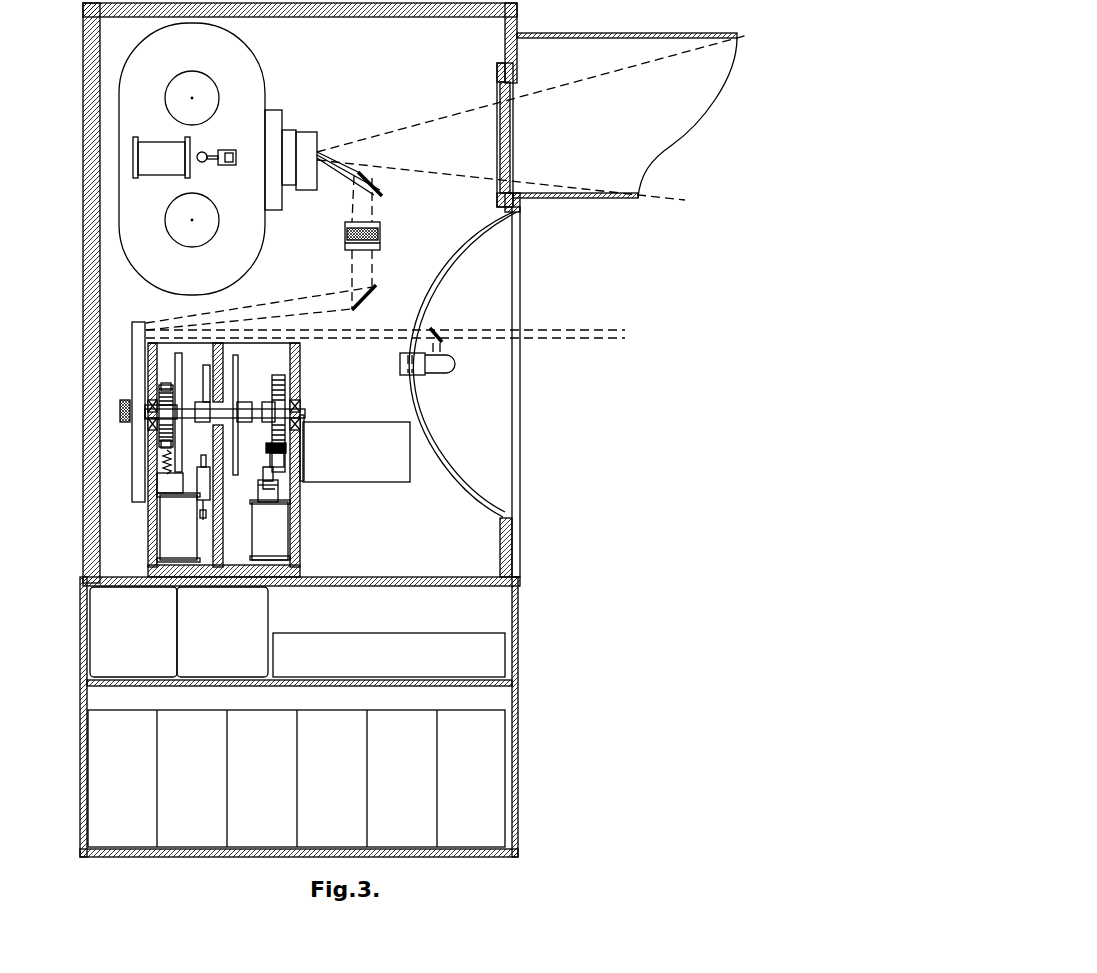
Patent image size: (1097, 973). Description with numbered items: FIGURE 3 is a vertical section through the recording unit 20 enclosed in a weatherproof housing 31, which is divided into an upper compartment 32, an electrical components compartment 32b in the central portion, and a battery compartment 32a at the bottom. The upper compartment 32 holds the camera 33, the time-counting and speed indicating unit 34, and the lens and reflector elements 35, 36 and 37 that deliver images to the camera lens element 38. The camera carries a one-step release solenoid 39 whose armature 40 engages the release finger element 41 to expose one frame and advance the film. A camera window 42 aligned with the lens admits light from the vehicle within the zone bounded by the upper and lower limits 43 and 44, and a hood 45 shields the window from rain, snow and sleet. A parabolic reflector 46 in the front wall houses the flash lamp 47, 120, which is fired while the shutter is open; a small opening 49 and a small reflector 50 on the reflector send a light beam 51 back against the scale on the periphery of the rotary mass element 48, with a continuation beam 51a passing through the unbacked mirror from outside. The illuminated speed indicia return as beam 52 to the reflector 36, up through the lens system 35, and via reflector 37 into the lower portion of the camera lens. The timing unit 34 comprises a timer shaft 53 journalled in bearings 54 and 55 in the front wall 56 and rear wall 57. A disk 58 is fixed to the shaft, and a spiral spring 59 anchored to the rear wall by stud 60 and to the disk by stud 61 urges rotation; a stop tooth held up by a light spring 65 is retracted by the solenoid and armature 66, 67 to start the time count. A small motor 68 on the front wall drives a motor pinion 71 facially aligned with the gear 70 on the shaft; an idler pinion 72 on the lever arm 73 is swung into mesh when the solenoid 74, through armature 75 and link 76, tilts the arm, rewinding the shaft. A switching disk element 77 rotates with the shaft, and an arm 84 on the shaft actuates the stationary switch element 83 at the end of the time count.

The recording unit 20 is at (80, 768).
The weatherproof housing 31 is at (80, 428).
The upper compartment 32 is at (132, 302).
The battery compartment 32a is at (130, 695).
The electrical components compartment 32b is at (475, 613).
The camera 33 is at (117, 232).
The time-counting and speed indicating unit 34 is at (135, 537).
The lens system 35 is at (381, 237).
The reflector 36 is at (366, 306).
The reflector 37 is at (383, 190).
The camera lens element 38 is at (308, 145).
The one-step release solenoid 39 is at (148, 163).
The armature 40 is at (199, 153).
The camera release finger element 41 is at (232, 152).
The camera window 42 is at (497, 125).
The upper limit 43 is at (572, 83).
The lower limit 44 is at (545, 186).
The hood 45 is at (628, 142).
The parabolic reflector 46 is at (452, 462).
The flash lamp 47 is at (453, 377).
The lamp housing 120 is at (447, 372).
The rotary mass element 48 is at (131, 343).
The small opening 49 is at (413, 346).
The small reflector 50 is at (438, 330).
The light beam 51 is at (358, 339).
The continuation beam 51a is at (535, 340).
The beam of illumination 52 is at (305, 300).
The timer shaft 53 is at (257, 409).
The bearing 54 is at (300, 400).
The bearing 55 is at (152, 426).
The front wall 56 is at (297, 368).
The rear wall 57 is at (150, 510).
The disk 58 is at (176, 362).
The spiral spring 59 is at (160, 388).
The stud 60 is at (173, 395).
The stud 61 is at (171, 446).
The light spring 65 is at (163, 464).
The solenoid 66 is at (173, 540).
The armature 67 is at (178, 487).
The small motor 68 is at (368, 462).
The gear 70 is at (278, 375).
The motor pinion 71 is at (270, 458).
The idler pinion 72 is at (266, 470).
The lever arm 73 is at (287, 475).
The solenoid 74 is at (260, 530).
The armature 75 is at (268, 496).
The link 76 is at (266, 448).
The disk element 77 is at (238, 376).
The switch element 83 is at (205, 512).
The arm 84 is at (207, 380).